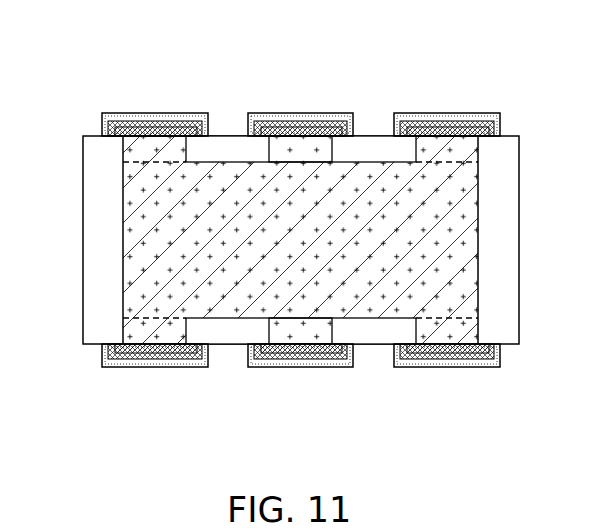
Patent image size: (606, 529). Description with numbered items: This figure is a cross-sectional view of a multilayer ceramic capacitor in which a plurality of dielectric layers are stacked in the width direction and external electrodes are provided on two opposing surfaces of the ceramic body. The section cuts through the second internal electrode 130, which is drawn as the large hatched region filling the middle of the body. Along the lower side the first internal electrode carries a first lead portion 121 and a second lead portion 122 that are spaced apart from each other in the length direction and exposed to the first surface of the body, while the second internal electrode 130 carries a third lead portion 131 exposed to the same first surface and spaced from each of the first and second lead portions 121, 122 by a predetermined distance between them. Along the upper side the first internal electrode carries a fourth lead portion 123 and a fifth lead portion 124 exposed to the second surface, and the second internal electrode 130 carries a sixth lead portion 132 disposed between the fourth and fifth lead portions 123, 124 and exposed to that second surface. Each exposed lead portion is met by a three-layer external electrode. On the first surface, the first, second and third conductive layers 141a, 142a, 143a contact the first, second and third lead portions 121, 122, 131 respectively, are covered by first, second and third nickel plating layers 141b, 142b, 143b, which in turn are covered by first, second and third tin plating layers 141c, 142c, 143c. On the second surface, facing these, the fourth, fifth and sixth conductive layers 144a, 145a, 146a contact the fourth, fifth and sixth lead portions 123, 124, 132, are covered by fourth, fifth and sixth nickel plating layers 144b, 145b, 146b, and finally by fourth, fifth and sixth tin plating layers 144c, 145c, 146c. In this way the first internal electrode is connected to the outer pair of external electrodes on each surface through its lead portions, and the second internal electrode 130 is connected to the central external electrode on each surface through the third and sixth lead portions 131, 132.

The second internal electrode 130 is at (457, 238).
The third lead portion 131 is at (280, 328).
The sixth lead portion 132 is at (280, 152).
The first lead portion 121 is at (132, 331).
The second lead portion 122 is at (468, 332).
The fourth lead portion 123 is at (132, 152).
The fifth lead portion 124 is at (472, 153).
The first conductive layer 141a is at (122, 367).
The first nickel plating layer 141b is at (155, 367).
The first tin plating layer 141c is at (192, 367).
The second conductive layer 142a is at (413, 367).
The second nickel plating layer 142b is at (447, 367).
The second tin plating layer 142c is at (485, 367).
The third conductive layer 143a is at (273, 367).
The third nickel plating layer 143b is at (307, 367).
The third tin plating layer 143c is at (345, 367).
The fourth conductive layer 144a is at (122, 113).
The fourth nickel plating layer 144b is at (155, 113).
The fourth tin plating layer 144c is at (192, 113).
The fifth conductive layer 145a is at (413, 113).
The fifth nickel plating layer 145b is at (447, 113).
The fifth tin plating layer 145c is at (485, 113).
The sixth conductive layer 146a is at (273, 113).
The sixth nickel plating layer 146b is at (307, 113).
The sixth tin plating layer 146c is at (345, 113).